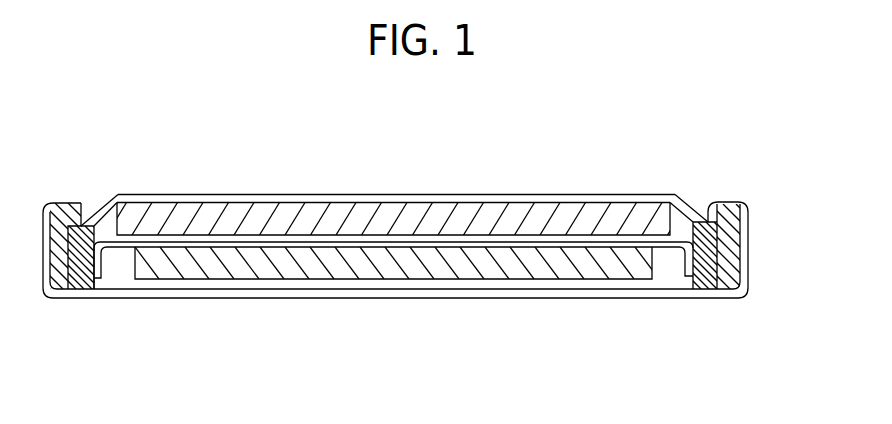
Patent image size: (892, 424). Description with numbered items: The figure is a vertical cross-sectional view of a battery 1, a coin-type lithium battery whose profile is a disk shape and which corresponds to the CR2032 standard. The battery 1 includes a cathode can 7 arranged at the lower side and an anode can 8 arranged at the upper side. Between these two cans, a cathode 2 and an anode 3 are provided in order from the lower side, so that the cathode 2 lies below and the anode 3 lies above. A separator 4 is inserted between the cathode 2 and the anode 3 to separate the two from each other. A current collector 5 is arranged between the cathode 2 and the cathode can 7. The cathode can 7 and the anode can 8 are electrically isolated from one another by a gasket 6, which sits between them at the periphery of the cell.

The battery 1 is at (608, 146).
The cathode 2 is at (431, 268).
The anode 3 is at (535, 212).
The separator 4 is at (300, 237).
The current collector 5 is at (290, 289).
The gasket 6 is at (67, 289).
The cathode can 7 is at (668, 295).
The anode can 8 is at (663, 195).